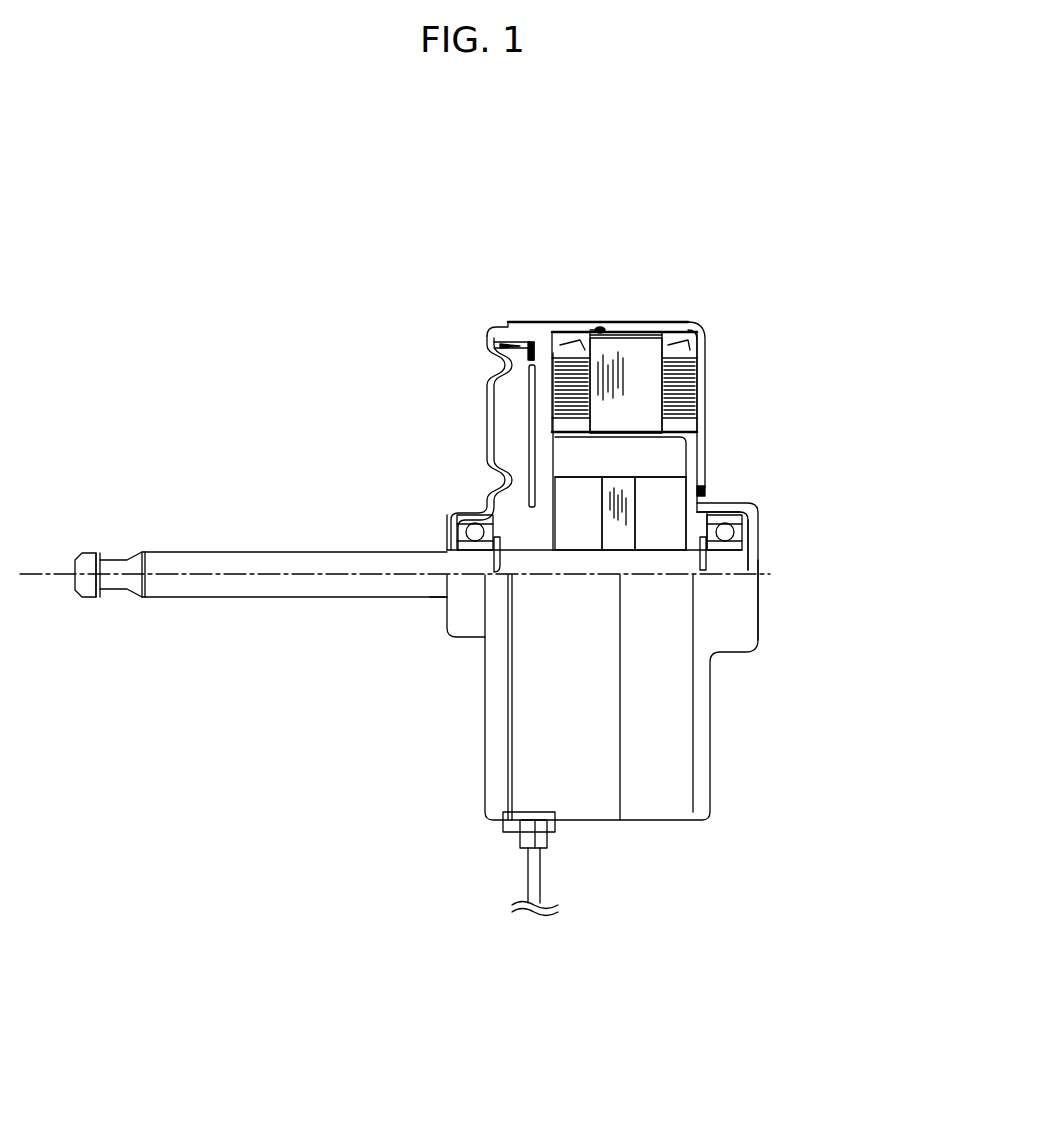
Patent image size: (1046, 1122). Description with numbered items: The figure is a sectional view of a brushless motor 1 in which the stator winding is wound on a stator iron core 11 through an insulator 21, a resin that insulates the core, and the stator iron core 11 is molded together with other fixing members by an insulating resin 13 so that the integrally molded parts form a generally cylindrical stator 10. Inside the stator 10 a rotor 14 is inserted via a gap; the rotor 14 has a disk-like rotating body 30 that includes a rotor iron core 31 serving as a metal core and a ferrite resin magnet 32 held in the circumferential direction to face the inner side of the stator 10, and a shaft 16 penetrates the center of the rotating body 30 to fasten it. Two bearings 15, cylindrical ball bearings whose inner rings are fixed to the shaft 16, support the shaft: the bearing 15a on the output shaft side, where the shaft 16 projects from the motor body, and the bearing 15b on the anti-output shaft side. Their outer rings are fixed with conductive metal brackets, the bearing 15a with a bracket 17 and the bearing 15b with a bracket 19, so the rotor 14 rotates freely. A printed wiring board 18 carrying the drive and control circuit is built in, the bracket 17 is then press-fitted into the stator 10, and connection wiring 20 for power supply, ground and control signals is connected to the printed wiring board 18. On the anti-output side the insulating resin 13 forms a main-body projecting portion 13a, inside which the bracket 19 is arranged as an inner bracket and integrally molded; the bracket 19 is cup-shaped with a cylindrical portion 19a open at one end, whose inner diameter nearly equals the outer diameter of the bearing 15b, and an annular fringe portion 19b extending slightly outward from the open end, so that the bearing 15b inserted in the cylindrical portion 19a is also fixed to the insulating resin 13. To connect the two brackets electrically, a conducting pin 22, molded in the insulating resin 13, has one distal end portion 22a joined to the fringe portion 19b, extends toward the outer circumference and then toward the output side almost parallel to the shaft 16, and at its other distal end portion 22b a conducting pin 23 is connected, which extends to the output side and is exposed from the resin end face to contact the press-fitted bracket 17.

The motor 1 is at (590, 370).
The stator 10 is at (717, 323).
The stator iron core 11 is at (633, 352).
The insulating resin 13 is at (545, 325).
The main-body projecting portion 13a is at (733, 625).
The rotor 14 is at (255, 445).
The bearings 15 is at (300, 615).
The bearing on the output shaft side 15a is at (475, 546).
The bearing on the anti-output shaft side 15b is at (720, 548).
The shaft 16 is at (355, 552).
The bracket 17 is at (490, 372).
The printed wiring board 18 is at (532, 440).
The bracket 19 is at (750, 543).
The cylindrical portion 19a is at (760, 505).
The fringe portion 19b is at (722, 498).
The connection wiring 20 is at (543, 863).
The insulator 21 is at (588, 330).
The conducting pin 22 is at (695, 378).
The distal end portion 22a is at (711, 494).
The distal end portion 22b is at (602, 328).
The conducting pin 23 is at (533, 342).
The rotating body 30 is at (637, 502).
The rotor iron core 31 is at (603, 494).
The ferrite resin magnet 32 is at (575, 460).